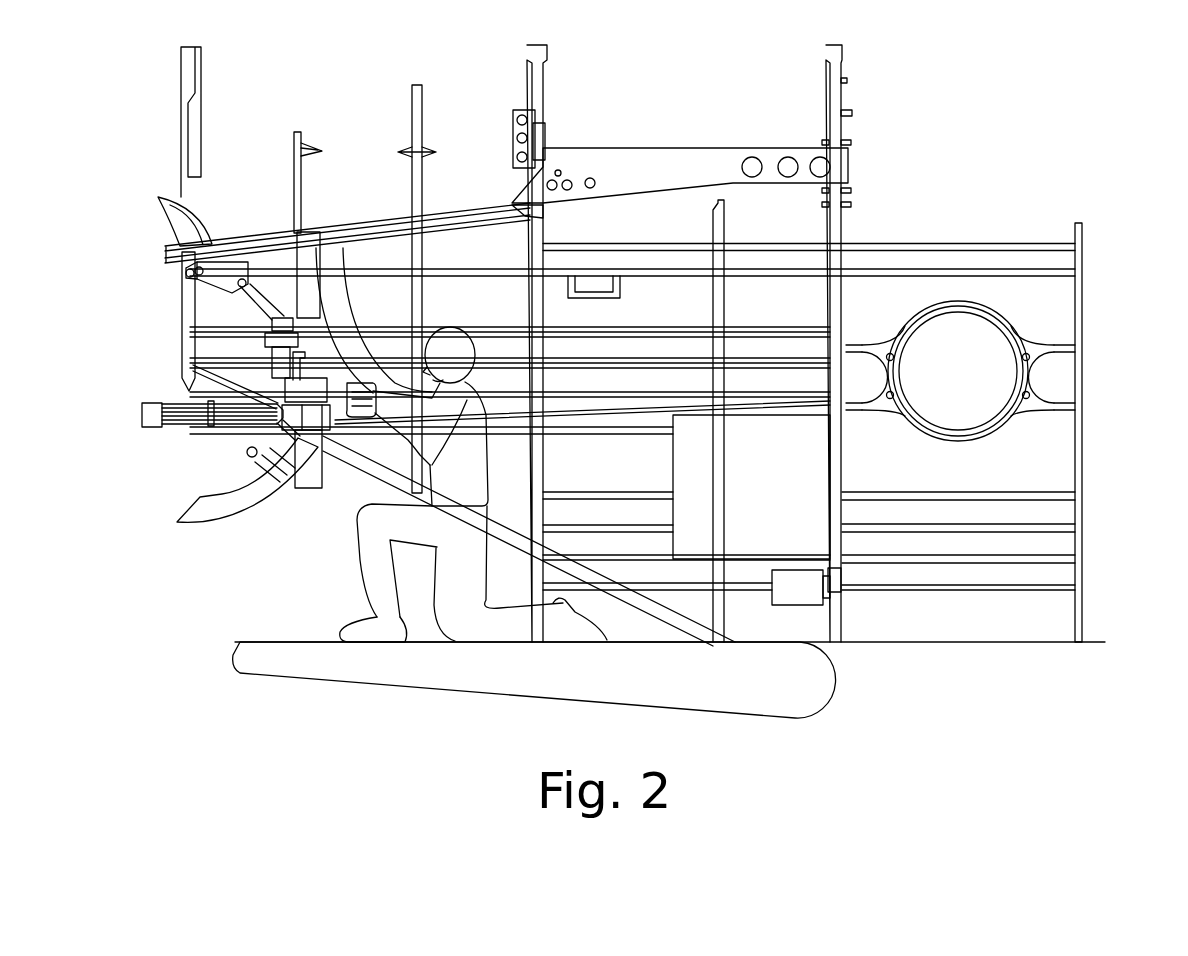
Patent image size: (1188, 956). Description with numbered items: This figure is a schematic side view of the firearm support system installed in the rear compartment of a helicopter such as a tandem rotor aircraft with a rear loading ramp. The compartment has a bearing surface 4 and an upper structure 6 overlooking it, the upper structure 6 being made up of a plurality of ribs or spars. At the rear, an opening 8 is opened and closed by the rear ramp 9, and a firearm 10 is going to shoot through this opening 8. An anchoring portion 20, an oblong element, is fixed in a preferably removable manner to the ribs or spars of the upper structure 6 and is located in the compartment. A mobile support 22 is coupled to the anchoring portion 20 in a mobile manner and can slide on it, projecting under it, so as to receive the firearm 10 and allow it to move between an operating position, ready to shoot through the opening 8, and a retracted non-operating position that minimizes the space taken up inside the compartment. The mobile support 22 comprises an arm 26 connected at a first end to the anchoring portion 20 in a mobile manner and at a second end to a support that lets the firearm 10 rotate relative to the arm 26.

The bearing surface 4 is at (1093, 641).
The upper structure 6 is at (299, 131).
The opening 8 is at (290, 595).
The rear ramp 9 is at (270, 653).
The firearm 10 is at (170, 396).
The anchoring portion 20 is at (270, 253).
The mobile support 22 is at (248, 338).
The arm 26 is at (250, 305).